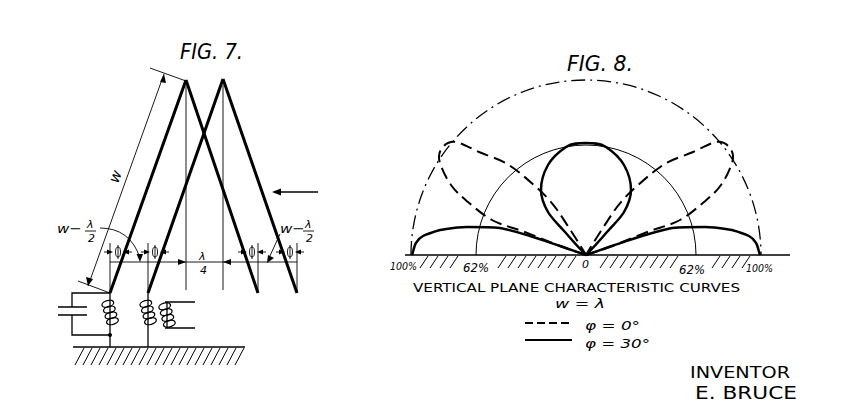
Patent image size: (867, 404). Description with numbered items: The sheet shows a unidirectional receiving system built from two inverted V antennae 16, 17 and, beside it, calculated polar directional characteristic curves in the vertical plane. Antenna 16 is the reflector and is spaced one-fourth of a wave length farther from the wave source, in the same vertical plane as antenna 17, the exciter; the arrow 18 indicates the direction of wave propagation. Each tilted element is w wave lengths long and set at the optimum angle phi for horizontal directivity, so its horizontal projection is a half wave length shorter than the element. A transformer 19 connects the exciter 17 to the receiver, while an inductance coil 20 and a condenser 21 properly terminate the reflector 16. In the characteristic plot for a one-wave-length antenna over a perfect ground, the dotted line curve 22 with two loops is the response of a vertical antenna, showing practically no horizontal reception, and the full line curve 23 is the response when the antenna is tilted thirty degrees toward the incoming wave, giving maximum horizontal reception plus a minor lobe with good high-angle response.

In FIG. 7, the inverted V antenna (reflector) 16 is at (165, 138).
In FIG. 7, the inverted V antenna (exciter) 17 is at (183, 194).
In FIG. 7, the arrow 18 is at (283, 179).
In FIG. 7, the transformer 19 is at (156, 301).
In FIG. 7, the inductance coil 20 is at (114, 319).
In FIG. 7, the condenser 21 is at (61, 307).
In FIG. 8, the dotted line curve 22 is at (452, 141).
In FIG. 8, the full line curve 23 is at (428, 230).